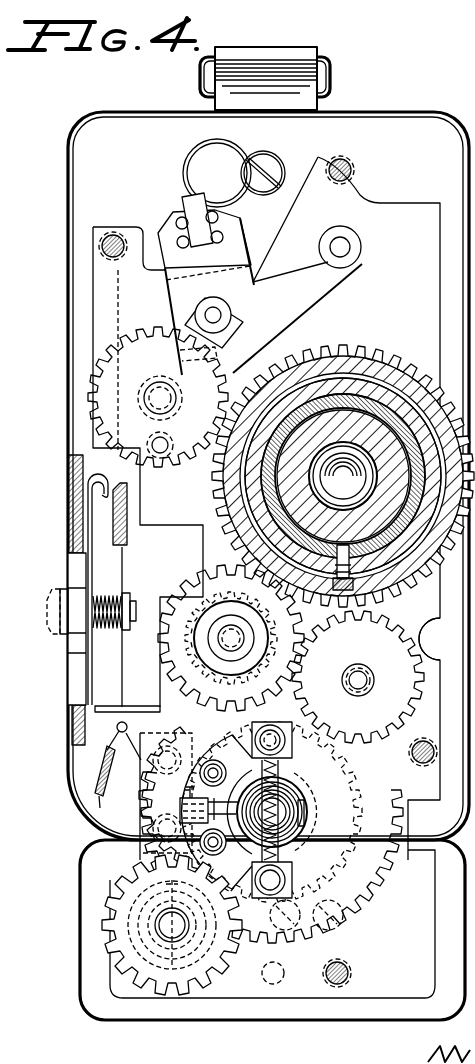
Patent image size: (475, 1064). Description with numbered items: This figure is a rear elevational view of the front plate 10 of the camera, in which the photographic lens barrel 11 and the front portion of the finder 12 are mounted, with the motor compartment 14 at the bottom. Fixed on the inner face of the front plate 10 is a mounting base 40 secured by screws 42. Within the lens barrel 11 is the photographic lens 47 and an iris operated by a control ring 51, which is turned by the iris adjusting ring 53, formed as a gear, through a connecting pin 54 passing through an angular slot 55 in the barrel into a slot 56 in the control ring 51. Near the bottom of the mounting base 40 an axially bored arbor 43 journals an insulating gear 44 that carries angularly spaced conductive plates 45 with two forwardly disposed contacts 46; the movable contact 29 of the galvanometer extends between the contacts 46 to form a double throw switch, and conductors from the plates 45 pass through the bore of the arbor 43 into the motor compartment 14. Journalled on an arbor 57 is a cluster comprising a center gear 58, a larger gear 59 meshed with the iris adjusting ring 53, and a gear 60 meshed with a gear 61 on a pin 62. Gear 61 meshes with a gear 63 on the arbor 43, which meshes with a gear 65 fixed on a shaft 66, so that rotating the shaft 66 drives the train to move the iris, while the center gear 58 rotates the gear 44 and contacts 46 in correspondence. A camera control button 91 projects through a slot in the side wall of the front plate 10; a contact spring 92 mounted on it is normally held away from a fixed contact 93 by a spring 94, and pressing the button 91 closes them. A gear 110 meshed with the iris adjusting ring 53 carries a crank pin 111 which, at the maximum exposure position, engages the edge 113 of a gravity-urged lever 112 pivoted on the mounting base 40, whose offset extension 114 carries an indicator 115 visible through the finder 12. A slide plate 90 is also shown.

The front plate 10 is at (68, 470).
The photographic lens barrel 11 is at (343, 460).
The finder 12 is at (200, 163).
The motor compartment 14 is at (307, 1007).
The movable contact 29 is at (202, 803).
The mounting base 40 is at (412, 215).
The screws 42 is at (110, 237).
The arbor 43 is at (288, 813).
The gear 44 is at (377, 877).
The conductive plates 45 is at (292, 745).
The contacts 46 is at (220, 769).
The photographic lens 47 is at (342, 453).
The control ring 51 is at (332, 403).
The iris adjusting ring 53 is at (302, 365).
The connecting pin 54 is at (343, 476).
The angular slot 55 is at (400, 591).
The slot 56 is at (343, 550).
The arbor 57 is at (224, 630).
The center gear 58 is at (175, 637).
The gear 59 is at (187, 590).
The gear 60 is at (206, 576).
The gear 61 is at (398, 653).
The pin 62 is at (360, 684).
The gear 63 is at (281, 812).
The gear 65 is at (282, 947).
The shaft 66 is at (165, 922).
The slide plate 90 is at (76, 690).
The camera control button 91 is at (55, 612).
The contact spring 92 is at (91, 645).
The fixed contact 93 is at (112, 706).
The spring 94 is at (103, 600).
The gear 110 is at (145, 326).
The crank pin 111 is at (162, 440).
The lever 112 is at (292, 262).
The edge 113 is at (230, 345).
The offset extension 114 is at (262, 222).
The indicator 115 is at (180, 203).